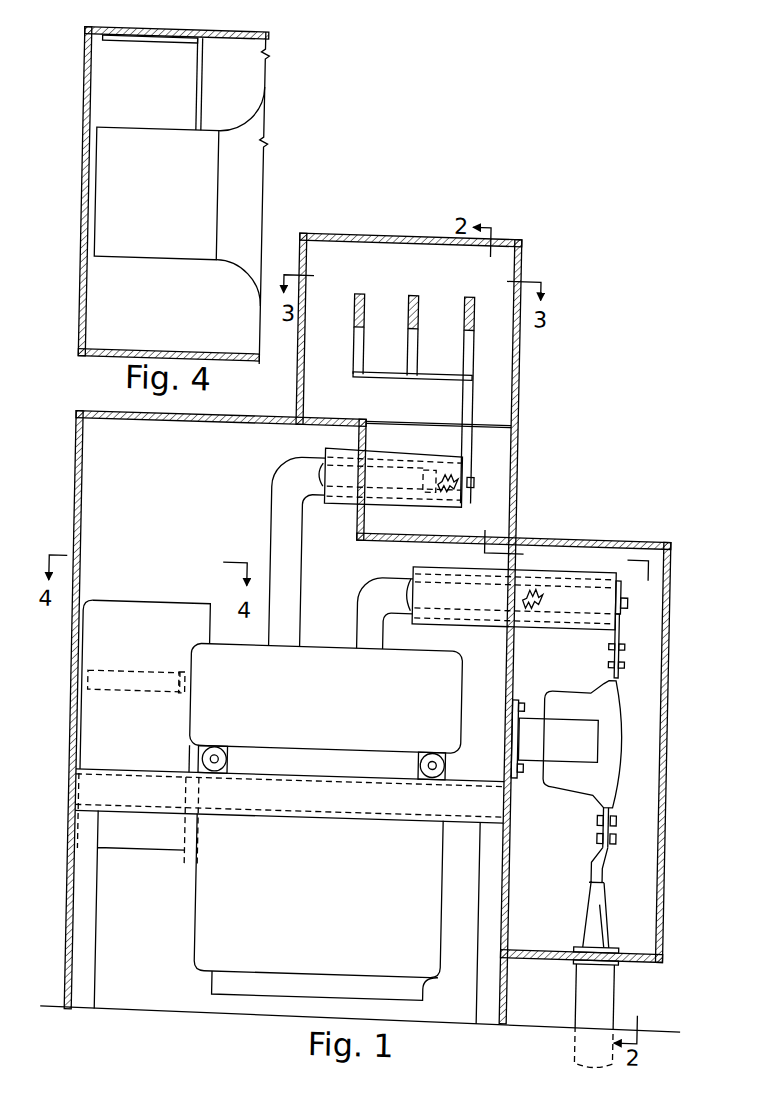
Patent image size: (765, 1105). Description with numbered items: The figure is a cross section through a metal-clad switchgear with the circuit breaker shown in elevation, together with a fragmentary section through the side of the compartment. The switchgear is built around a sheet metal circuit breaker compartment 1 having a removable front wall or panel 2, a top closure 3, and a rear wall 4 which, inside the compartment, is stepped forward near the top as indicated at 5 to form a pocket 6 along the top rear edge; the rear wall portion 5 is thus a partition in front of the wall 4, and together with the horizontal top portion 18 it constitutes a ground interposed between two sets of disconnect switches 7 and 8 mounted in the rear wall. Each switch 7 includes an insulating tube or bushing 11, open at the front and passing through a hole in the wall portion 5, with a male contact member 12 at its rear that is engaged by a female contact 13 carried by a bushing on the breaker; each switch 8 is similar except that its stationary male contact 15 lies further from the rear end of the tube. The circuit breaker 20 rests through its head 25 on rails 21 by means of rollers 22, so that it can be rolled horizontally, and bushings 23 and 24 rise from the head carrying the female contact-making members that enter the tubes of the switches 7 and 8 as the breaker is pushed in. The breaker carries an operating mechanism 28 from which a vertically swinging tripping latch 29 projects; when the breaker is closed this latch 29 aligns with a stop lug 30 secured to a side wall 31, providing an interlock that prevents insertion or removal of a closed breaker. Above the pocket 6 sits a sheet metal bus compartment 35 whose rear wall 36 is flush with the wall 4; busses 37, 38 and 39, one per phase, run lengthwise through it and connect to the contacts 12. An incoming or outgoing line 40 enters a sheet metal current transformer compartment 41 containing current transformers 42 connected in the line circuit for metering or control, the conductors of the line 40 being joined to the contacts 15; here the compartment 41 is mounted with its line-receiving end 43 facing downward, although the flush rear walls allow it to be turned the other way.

In FIG. 1, the circuit breaker compartment 1 is at (146, 998).
In FIG. 1, the removable front wall or panel 2 is at (73, 625).
In FIG. 1, the top closure 3 is at (213, 423).
In FIG. 1, the rear wall 4 is at (516, 901).
In FIG. 1, the rear wall portion 5 is at (356, 521).
In FIG. 1, the pocket 6 is at (498, 476).
In FIG. 1, the disconnect switch 7 is at (335, 437).
In FIG. 1, the disconnect switch 8 is at (469, 628).
In FIG. 1, the tube or bushing 11 is at (384, 458).
In FIG. 1, the male contact member 12 is at (457, 455).
In FIG. 1, the female contact 13 is at (444, 466).
In FIG. 1, the stationary male contact 15 is at (538, 583).
In FIG. 1, the horizontal top portion 18 is at (387, 537).
In FIG. 1, the circuit breaker 20 is at (232, 963).
In FIG. 1, the rails 21 is at (473, 806).
In FIG. 1, the rollers 22 is at (228, 752).
In FIG. 1, the bushing 23 is at (300, 593).
In FIG. 1, the bushing 24 is at (356, 624).
In FIG. 1, the head 25 is at (256, 650).
In FIG. 4, the operating mechanism 28 is at (155, 263).
In FIG. 1, the operating mechanism 28 is at (158, 621).
In FIG. 4, the tripping latch 29 is at (183, 99).
In FIG. 1, the tripping latch 29 is at (179, 675).
In FIG. 4, the stop lug 30 is at (135, 47).
In FIG. 1, the stop lug 30 is at (132, 675).
In FIG. 4, the side wall 31 is at (219, 40).
In FIG. 1, the bus compartment 35 is at (497, 398).
In FIG. 1, the rear wall 36 is at (519, 349).
In FIG. 1, the bus 37 is at (349, 292).
In FIG. 1, the bus 38 is at (404, 292).
In FIG. 1, the bus 39 is at (458, 291).
In FIG. 1, the incoming or outgoing line 40 is at (619, 996).
In FIG. 1, the current transformer compartment 41 is at (663, 859).
In FIG. 1, the current transformers 42 is at (615, 713).
In FIG. 1, the line-receiving end 43 is at (633, 950).